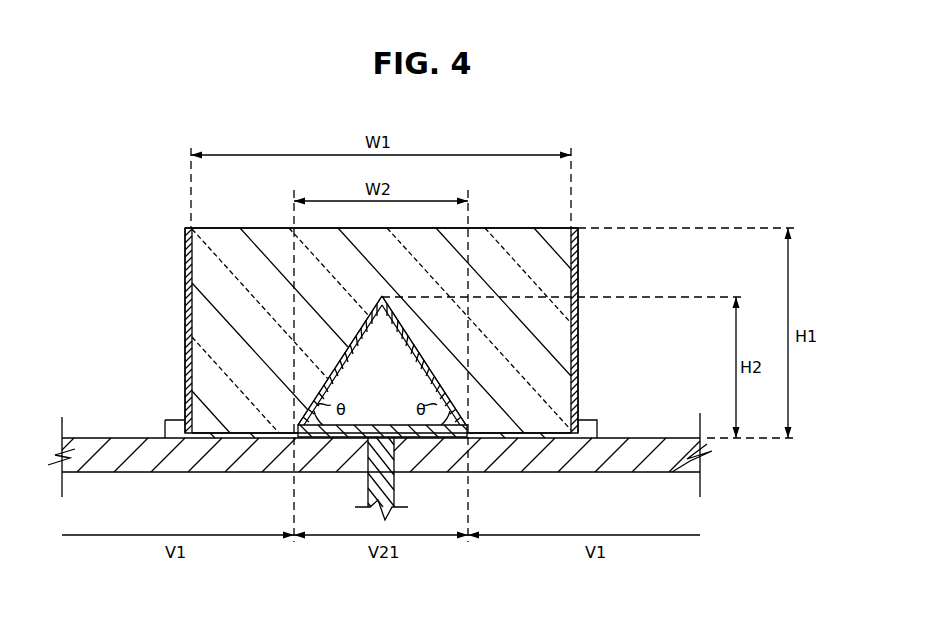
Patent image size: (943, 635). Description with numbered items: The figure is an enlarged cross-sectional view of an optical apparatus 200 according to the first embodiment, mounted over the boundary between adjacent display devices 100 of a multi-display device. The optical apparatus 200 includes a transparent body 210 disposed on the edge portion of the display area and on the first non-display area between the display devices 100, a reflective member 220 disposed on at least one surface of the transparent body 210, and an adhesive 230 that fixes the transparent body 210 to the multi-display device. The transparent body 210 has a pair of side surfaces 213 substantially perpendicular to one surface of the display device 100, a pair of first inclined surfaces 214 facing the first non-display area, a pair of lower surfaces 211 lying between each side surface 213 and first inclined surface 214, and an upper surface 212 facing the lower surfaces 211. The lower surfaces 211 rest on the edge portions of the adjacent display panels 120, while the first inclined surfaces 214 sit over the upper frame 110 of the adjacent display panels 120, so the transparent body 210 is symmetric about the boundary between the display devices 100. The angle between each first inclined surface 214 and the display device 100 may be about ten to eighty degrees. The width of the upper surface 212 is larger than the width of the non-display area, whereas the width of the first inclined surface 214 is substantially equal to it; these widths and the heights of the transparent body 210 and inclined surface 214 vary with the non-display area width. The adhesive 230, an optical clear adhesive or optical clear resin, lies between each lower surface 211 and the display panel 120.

The display device 100 is at (394, 429).
The upper frame 110 is at (367, 478).
The display panel 120 is at (657, 472).
The optical apparatus 200 is at (398, 364).
The transparent body 210 is at (533, 250).
The lower surface 211 is at (523, 432).
The upper surface 212 is at (222, 227).
The side surface 213 is at (575, 285).
The first inclined surface 214 is at (424, 360).
The reflective member 220 is at (573, 333).
The adhesive 230 is at (505, 438).